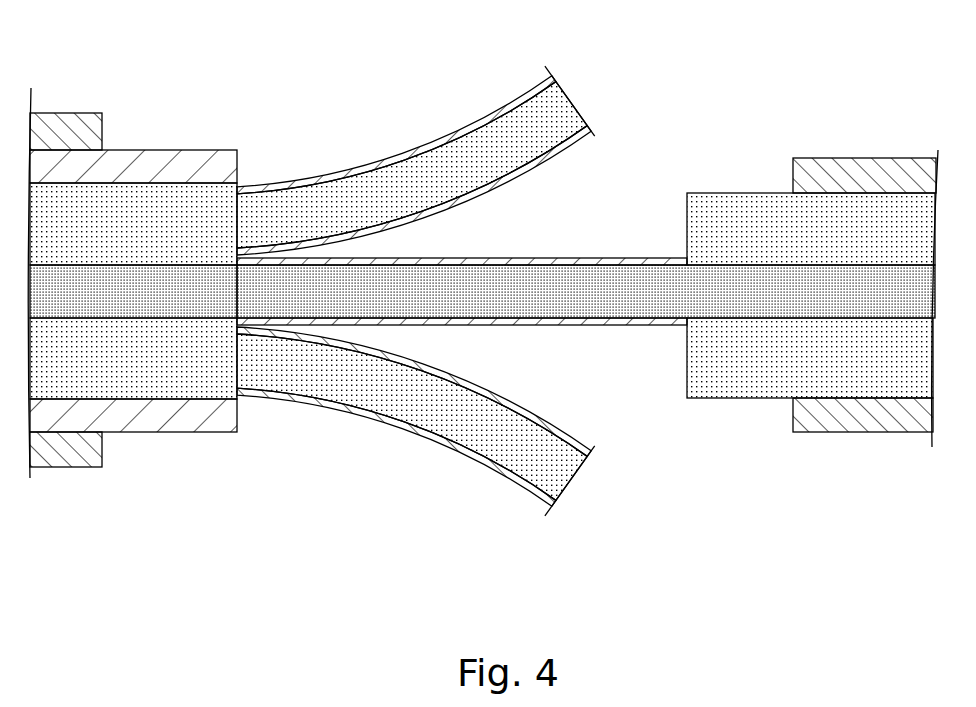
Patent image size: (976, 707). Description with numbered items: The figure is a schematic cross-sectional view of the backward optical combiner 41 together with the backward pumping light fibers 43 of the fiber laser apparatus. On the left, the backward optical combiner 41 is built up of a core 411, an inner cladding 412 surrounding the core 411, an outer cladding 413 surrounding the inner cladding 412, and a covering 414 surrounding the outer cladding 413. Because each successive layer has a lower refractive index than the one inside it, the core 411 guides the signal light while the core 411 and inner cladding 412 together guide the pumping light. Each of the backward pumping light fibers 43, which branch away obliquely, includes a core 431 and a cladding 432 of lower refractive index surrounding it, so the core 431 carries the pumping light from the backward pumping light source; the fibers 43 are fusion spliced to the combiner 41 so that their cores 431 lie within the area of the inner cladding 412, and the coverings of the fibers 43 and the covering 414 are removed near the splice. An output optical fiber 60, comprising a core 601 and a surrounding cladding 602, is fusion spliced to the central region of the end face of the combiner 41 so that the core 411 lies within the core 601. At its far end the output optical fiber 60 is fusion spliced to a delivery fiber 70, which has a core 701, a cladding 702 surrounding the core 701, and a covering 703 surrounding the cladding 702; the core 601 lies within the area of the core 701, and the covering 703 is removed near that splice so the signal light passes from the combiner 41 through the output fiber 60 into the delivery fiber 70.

The backward optical combiner 41 is at (132, 274).
The core 411 is at (200, 293).
The inner cladding 412 is at (147, 362).
The outer cladding 413 is at (148, 168).
The covering 414 is at (73, 446).
The backward pumping light fibers 43 is at (416, 292).
The core 431 is at (521, 135).
The cladding 432 is at (372, 165).
The output optical fiber 60 is at (586, 279).
The core 601 is at (515, 262).
The cladding 602 is at (547, 326).
The delivery fiber 70 is at (812, 256).
The core 701 is at (722, 302).
The cladding 702 is at (762, 227).
The covering 703 is at (848, 415).